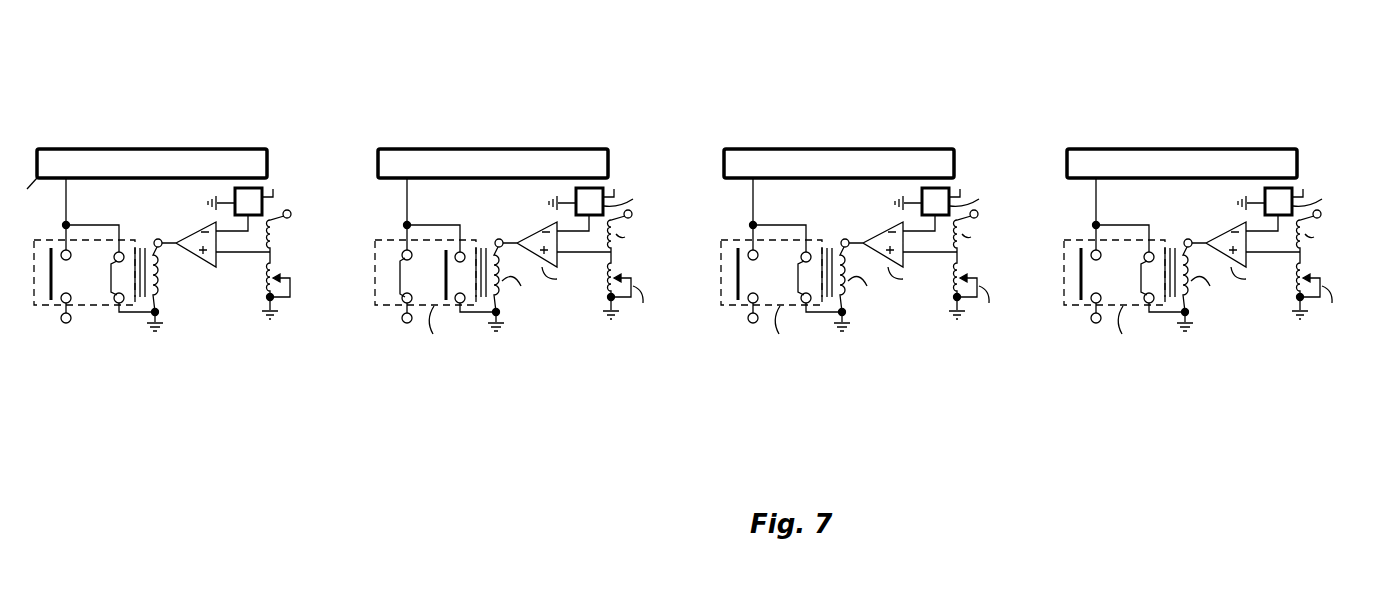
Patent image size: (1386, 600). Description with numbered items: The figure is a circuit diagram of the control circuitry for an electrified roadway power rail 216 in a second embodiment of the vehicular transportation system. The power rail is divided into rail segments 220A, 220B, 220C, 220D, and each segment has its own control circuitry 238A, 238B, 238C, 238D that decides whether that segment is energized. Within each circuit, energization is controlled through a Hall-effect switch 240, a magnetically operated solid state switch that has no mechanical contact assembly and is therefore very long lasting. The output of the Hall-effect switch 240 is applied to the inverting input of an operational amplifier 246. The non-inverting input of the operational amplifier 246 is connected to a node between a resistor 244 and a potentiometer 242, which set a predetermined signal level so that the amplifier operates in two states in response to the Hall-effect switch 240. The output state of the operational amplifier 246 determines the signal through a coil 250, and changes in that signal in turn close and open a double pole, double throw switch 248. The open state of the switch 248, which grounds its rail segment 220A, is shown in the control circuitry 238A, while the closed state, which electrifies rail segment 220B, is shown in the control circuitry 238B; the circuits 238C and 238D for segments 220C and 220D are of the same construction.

The power rail 216 is at (46, 199).
The rail segment 220A is at (120, 157).
The rail segment 220B is at (493, 140).
The rail segment 220C is at (839, 140).
The rail segment 220D is at (1182, 140).
The control circuitry 238A is at (182, 249).
The control circuitry 238B is at (529, 249).
The control circuitry 238C is at (875, 249).
The control circuitry 238D is at (1218, 249).
The Hall-effect switch 240 is at (263, 206).
The potentiometer 242 is at (292, 286).
The resistor 244 is at (275, 234).
The operational amplifier 246 is at (201, 267).
The double pole, double throw switch 248 is at (93, 306).
The coil 250 is at (161, 281).